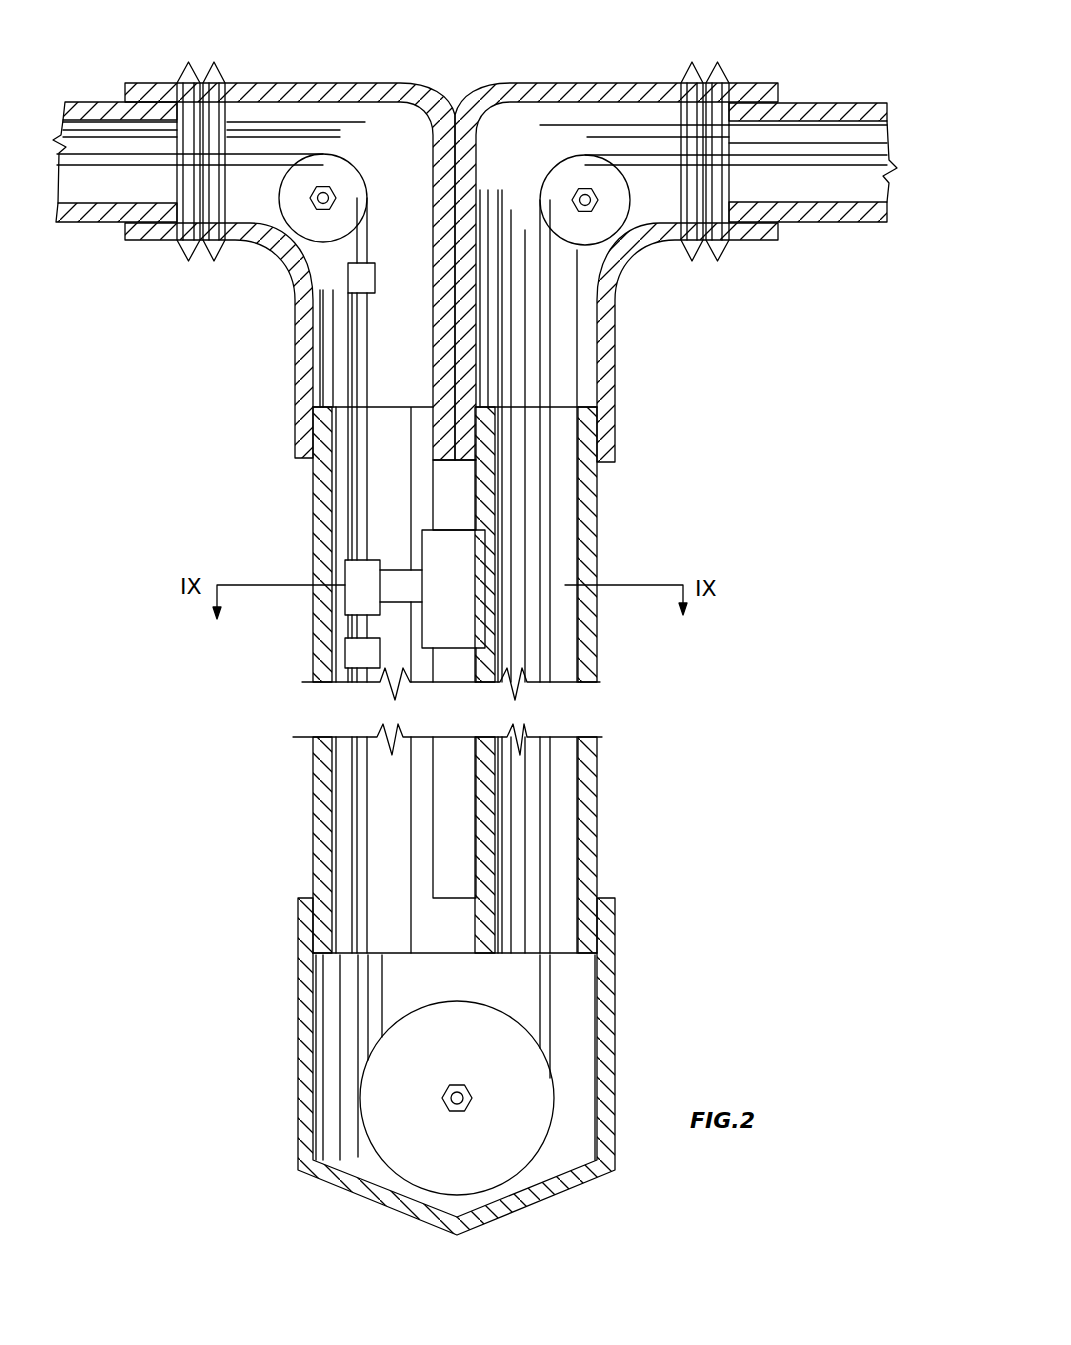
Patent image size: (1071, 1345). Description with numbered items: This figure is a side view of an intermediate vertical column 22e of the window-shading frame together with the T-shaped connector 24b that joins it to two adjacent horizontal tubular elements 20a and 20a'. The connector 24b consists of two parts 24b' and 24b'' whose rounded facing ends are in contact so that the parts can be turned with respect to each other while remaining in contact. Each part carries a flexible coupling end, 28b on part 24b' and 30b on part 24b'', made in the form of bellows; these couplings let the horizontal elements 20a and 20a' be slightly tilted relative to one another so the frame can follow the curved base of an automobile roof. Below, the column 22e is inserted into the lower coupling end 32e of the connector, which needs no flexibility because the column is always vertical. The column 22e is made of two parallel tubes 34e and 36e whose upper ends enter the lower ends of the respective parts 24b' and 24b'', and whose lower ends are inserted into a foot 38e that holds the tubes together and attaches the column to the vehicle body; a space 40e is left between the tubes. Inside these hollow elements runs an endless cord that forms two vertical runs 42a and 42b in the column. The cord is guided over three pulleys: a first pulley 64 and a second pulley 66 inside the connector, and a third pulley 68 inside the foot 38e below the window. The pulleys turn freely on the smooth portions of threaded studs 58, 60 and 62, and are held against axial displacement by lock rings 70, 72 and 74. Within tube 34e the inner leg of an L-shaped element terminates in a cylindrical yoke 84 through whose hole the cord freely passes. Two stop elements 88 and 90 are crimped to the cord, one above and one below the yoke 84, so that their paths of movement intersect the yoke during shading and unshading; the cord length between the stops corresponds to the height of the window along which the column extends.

The horizontal tubular element 20a is at (115, 130).
The horizontal tubular element 20a' is at (813, 129).
The T-shaped connector 24b is at (451, 248).
The connector part 24b' is at (219, 340).
The connector part 24b'' is at (687, 342).
The flexible coupling end 28b is at (203, 64).
The flexible coupling end 30b is at (700, 54).
The vertical column 22e is at (298, 518).
The lower coupling end 32e is at (670, 410).
The tube 34e is at (312, 615).
The tube 36e is at (597, 650).
The foot 38e is at (668, 952).
The space 40e is at (460, 767).
The vertical run of cord 42a is at (360, 490).
The vertical run of cord 42b is at (547, 478).
The threaded stud 58 is at (317, 210).
The threaded stud 60 is at (592, 210).
The threaded stud 62 is at (464, 1088).
The first pulley 64 is at (292, 207).
The second pulley 66 is at (613, 217).
The third pulley 68 is at (473, 1156).
The lock ring 70 is at (336, 184).
The lock ring 72 is at (575, 190).
The lock ring 74 is at (448, 1090).
The cylindrical yoke 84 is at (350, 572).
The stop element 88 is at (372, 280).
The stop element 90 is at (345, 652).